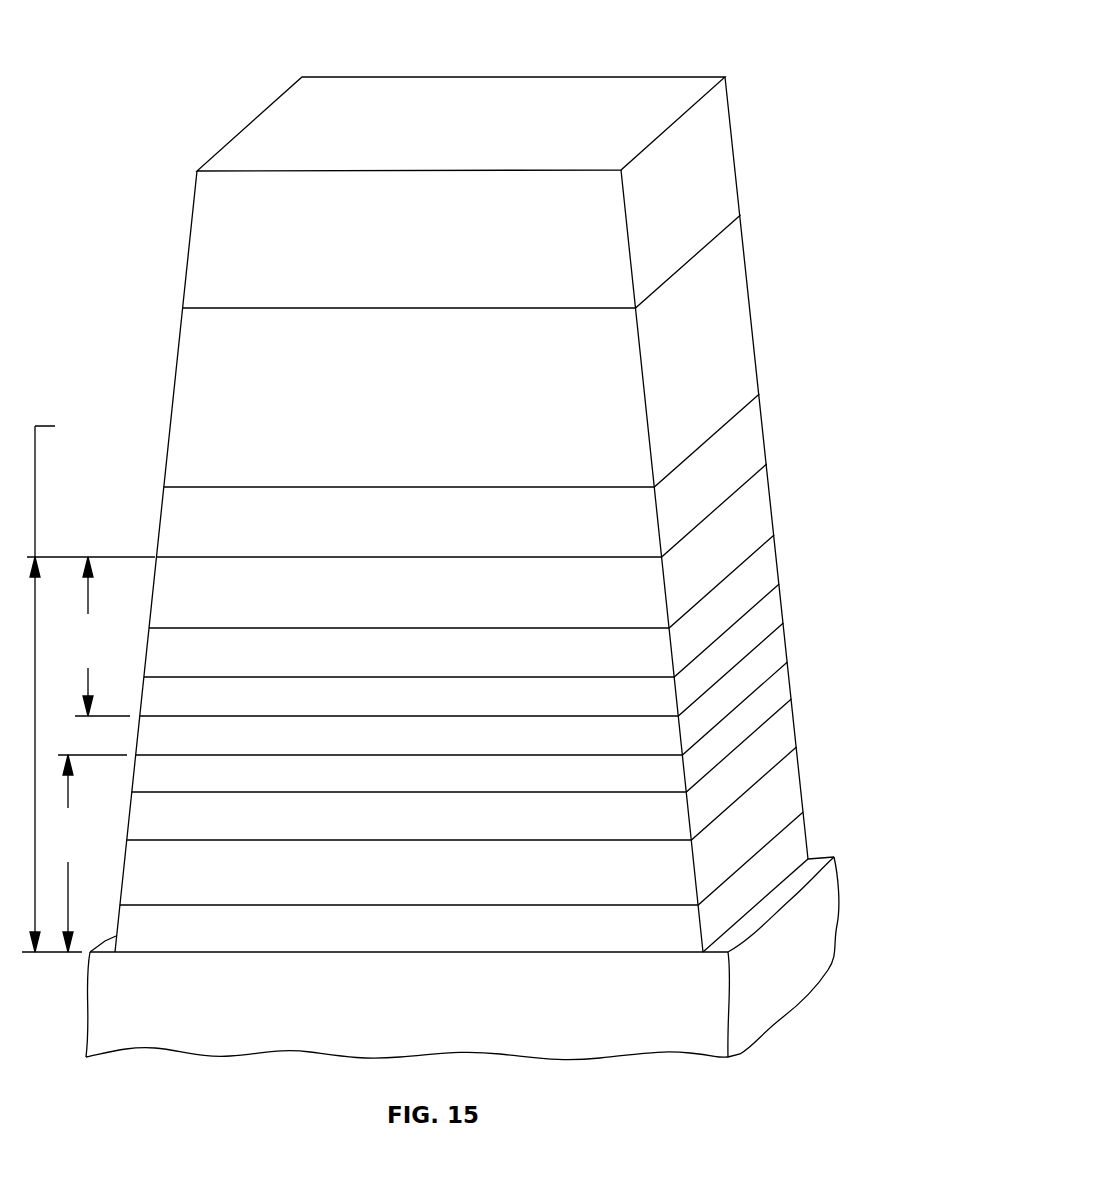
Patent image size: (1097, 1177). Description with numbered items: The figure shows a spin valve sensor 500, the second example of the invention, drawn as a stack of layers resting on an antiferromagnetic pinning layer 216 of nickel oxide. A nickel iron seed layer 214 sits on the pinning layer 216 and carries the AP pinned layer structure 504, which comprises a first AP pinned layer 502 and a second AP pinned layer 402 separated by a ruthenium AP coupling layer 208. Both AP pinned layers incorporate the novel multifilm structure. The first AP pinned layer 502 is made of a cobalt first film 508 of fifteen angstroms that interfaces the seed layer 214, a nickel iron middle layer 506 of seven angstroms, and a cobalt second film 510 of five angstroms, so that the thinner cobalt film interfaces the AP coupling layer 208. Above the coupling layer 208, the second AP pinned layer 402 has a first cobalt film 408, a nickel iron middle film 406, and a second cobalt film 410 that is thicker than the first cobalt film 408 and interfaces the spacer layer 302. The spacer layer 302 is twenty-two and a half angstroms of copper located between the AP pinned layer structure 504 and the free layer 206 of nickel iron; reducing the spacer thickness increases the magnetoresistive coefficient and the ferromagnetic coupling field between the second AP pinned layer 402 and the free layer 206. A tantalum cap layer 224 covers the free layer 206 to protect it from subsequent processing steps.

The spin valve sensor 500 is at (474, 482).
The cap layer 224 is at (503, 219).
The free layer 206 is at (501, 375).
The spacer layer 302 is at (509, 485).
The second cobalt film 410 is at (506, 554).
The nickel iron middle film 406 is at (507, 610).
The first cobalt film 408 is at (510, 653).
The AP coupling layer 208 is at (509, 694).
The cobalt second film 510 is at (507, 729).
The nickel iron middle layer 506 is at (507, 775).
The cobalt first film 508 is at (506, 838).
The seed layer 214 is at (505, 888).
The antiferromagnetic pinning layer 216 is at (480, 958).
The AP pinned layer structure 504 is at (88, 683).
The second AP pinned layer 402 is at (98, 636).
The first AP pinned layer 502 is at (88, 853).